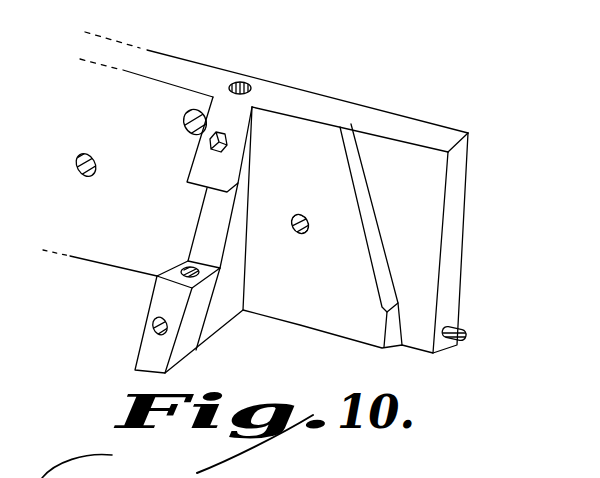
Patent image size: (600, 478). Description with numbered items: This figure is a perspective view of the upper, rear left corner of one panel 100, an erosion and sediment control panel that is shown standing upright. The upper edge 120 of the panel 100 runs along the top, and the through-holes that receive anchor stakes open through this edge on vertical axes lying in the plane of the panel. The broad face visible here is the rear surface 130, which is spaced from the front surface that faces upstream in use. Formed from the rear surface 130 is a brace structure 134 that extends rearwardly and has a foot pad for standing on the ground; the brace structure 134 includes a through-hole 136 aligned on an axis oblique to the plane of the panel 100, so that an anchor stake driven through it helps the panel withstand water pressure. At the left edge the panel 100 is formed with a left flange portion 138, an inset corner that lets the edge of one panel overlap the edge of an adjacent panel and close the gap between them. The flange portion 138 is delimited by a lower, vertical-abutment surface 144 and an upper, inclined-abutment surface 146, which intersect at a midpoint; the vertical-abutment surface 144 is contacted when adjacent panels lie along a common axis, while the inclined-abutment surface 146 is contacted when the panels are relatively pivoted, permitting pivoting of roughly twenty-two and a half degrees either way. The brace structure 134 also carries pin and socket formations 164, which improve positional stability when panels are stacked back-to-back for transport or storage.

The panel 100 is at (334, 59).
The upper edge 120 is at (150, 57).
The rear surface 130 is at (100, 254).
The brace structure 134 is at (216, 322).
The through-hole 136 is at (245, 83).
The left flange portion 138 is at (419, 152).
The lower, vertical-abutment surface 144 is at (387, 331).
The upper, inclined-abutment surface 146 is at (372, 222).
The pin and socket formations 164 is at (210, 143).